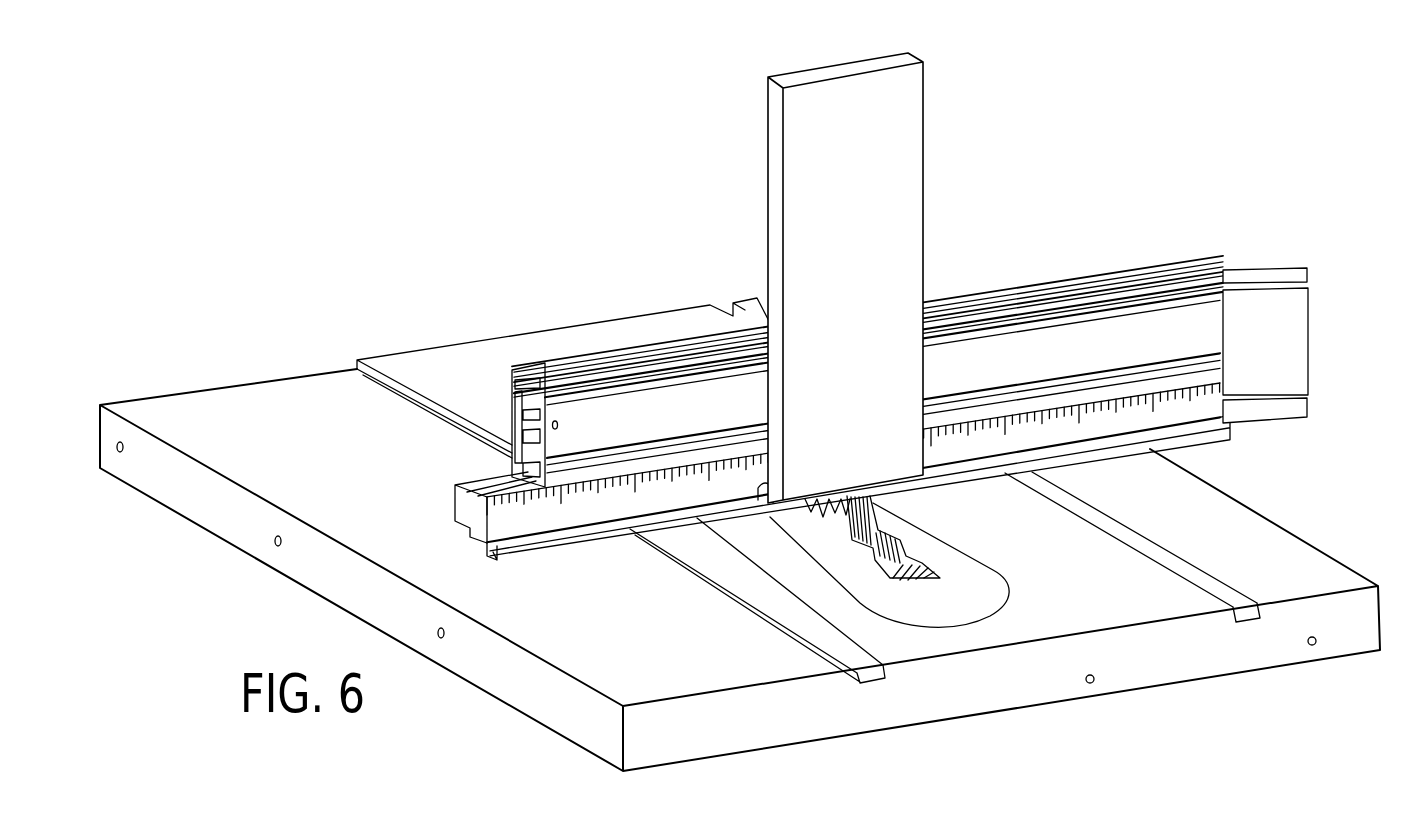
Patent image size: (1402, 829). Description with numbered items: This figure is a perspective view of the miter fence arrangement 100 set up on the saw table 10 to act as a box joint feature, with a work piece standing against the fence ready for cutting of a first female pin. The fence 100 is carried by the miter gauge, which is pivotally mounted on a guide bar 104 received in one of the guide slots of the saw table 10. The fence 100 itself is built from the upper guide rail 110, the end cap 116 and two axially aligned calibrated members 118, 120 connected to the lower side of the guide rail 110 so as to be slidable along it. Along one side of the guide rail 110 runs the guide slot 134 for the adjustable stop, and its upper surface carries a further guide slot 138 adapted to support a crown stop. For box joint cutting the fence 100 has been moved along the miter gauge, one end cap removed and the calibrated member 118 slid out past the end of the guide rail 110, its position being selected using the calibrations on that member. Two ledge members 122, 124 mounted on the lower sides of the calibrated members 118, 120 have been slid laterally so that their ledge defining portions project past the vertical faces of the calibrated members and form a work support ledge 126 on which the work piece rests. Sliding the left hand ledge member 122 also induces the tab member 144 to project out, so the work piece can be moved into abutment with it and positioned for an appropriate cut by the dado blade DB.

The saw table 10 is at (223, 452).
The miter fence arrangement 100 is at (885, 382).
The guide bar 104 is at (1218, 590).
The upper guide rail 110 is at (570, 437).
The end cap 116 is at (1277, 313).
The calibrated member 118 is at (557, 512).
The calibrated member 120 is at (1203, 412).
The ledge member 122 is at (467, 535).
The ledge member 124 is at (1173, 443).
The work support ledge 126 is at (530, 525).
The guide slot 134 is at (620, 390).
The guide slot 138 is at (550, 362).
The tab member 144 is at (770, 492).
The dado blade DB is at (870, 563).